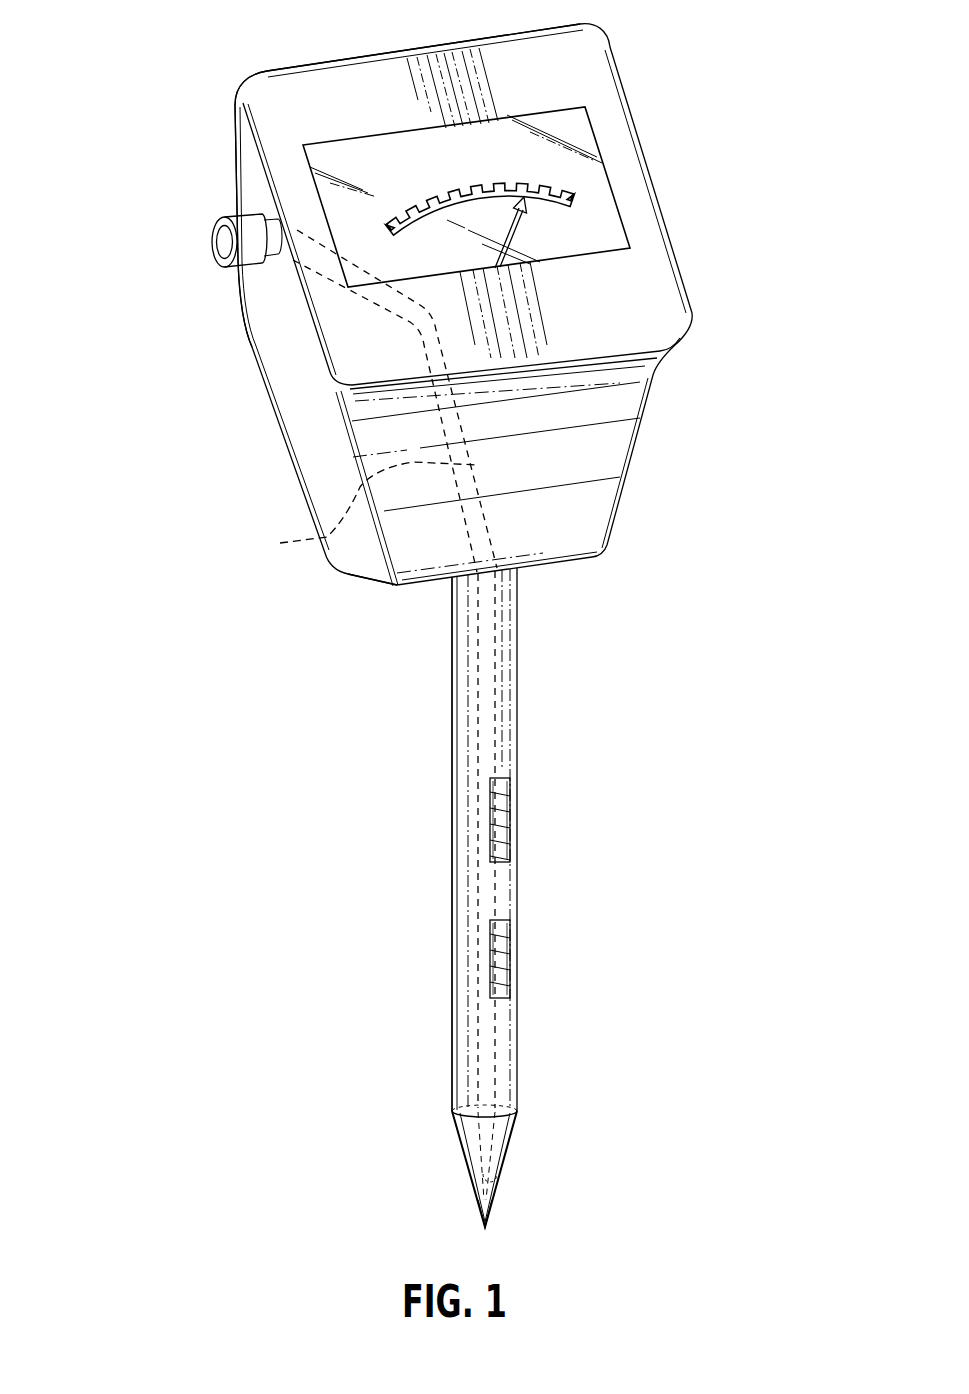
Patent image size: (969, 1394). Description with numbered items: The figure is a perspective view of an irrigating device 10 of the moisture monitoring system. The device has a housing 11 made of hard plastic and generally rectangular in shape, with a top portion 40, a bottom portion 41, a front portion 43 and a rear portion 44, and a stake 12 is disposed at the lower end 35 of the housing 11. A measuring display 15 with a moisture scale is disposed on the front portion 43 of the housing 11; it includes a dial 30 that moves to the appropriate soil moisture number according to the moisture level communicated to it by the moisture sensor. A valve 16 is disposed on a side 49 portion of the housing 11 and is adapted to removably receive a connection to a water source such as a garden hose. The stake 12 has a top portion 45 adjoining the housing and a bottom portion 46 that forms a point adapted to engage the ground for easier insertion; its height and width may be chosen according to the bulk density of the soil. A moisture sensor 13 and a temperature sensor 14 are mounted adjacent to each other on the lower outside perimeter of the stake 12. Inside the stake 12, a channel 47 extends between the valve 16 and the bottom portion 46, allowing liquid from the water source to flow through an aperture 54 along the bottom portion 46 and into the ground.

The irrigating device 10 is at (178, 343).
The housing 11 is at (592, 75).
The stake 12 is at (502, 655).
The moisture sensor 13 is at (500, 973).
The temperature sensor 14 is at (500, 823).
The measuring display 15 is at (598, 193).
The valve 16 is at (213, 232).
The dial 30 is at (558, 248).
The lower end 35 is at (570, 560).
The top portion 40 is at (357, 54).
The bottom portion 41 is at (622, 510).
The front portion 43 is at (607, 127).
The rear portion 44 is at (240, 176).
The top portion 45 is at (517, 603).
The bottom portion 46 is at (503, 1148).
The channel 47 is at (371, 401).
The side 49 is at (243, 295).
The aperture 54 is at (470, 1185).